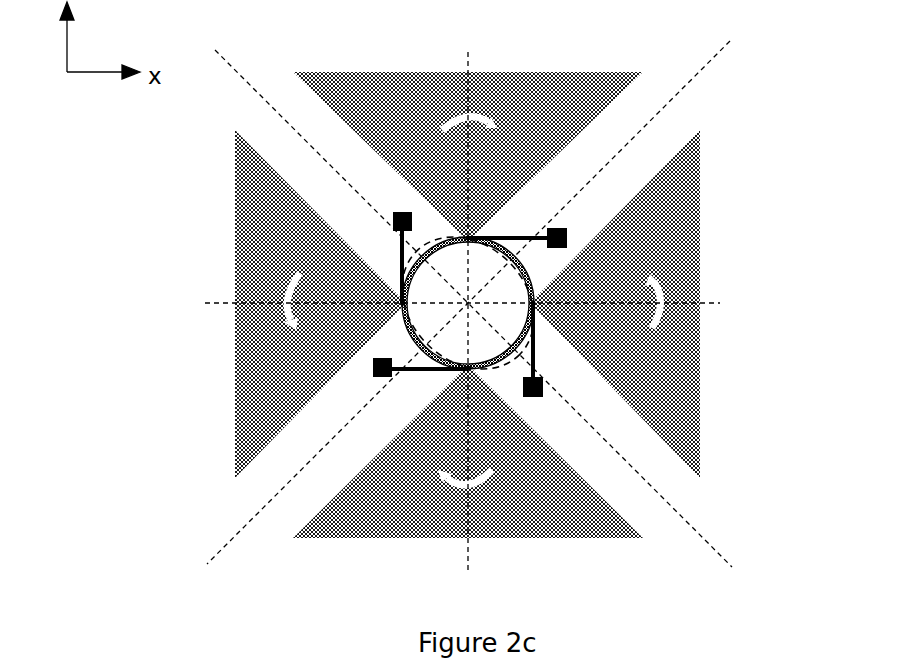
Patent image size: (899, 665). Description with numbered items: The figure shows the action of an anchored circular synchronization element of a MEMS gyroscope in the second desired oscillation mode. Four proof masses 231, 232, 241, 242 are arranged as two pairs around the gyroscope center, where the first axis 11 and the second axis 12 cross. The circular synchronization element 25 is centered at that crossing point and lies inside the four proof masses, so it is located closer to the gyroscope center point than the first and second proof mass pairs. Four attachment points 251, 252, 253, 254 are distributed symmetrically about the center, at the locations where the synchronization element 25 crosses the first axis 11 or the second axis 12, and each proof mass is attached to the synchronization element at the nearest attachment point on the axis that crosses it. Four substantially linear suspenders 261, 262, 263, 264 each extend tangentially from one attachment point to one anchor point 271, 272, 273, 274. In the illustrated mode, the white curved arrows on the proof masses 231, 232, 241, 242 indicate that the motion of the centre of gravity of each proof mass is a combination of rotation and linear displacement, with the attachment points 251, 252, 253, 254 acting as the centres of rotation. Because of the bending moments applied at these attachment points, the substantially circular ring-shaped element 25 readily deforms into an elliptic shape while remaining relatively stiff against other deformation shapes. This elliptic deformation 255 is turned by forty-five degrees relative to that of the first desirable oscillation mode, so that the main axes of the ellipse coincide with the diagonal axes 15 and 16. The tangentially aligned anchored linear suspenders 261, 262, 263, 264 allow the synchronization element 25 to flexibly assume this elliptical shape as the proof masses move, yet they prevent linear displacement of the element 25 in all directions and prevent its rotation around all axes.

The first axis 11 is at (480, 308).
The second axis 12 is at (472, 299).
The diagonal axis 15 is at (454, 320).
The diagonal axis 16 is at (455, 298).
The circular synchronization element 25 is at (541, 268).
The proof mass 231 is at (262, 357).
The proof mass 232 is at (658, 346).
The proof mass 241 is at (535, 501).
The proof mass 242 is at (416, 115).
The attachment point 251 is at (388, 300).
The attachment point 252 is at (544, 312).
The attachment point 253 is at (463, 383).
The attachment point 254 is at (472, 224).
The elliptic deformation 255 is at (431, 222).
The linear suspender 261 is at (387, 248).
The linear suspender 262 is at (545, 358).
The linear suspender 263 is at (410, 380).
The linear suspender 264 is at (518, 225).
The anchor point 271 is at (388, 201).
The anchor point 272 is at (548, 405).
The anchor point 273 is at (363, 379).
The anchor point 274 is at (575, 221).